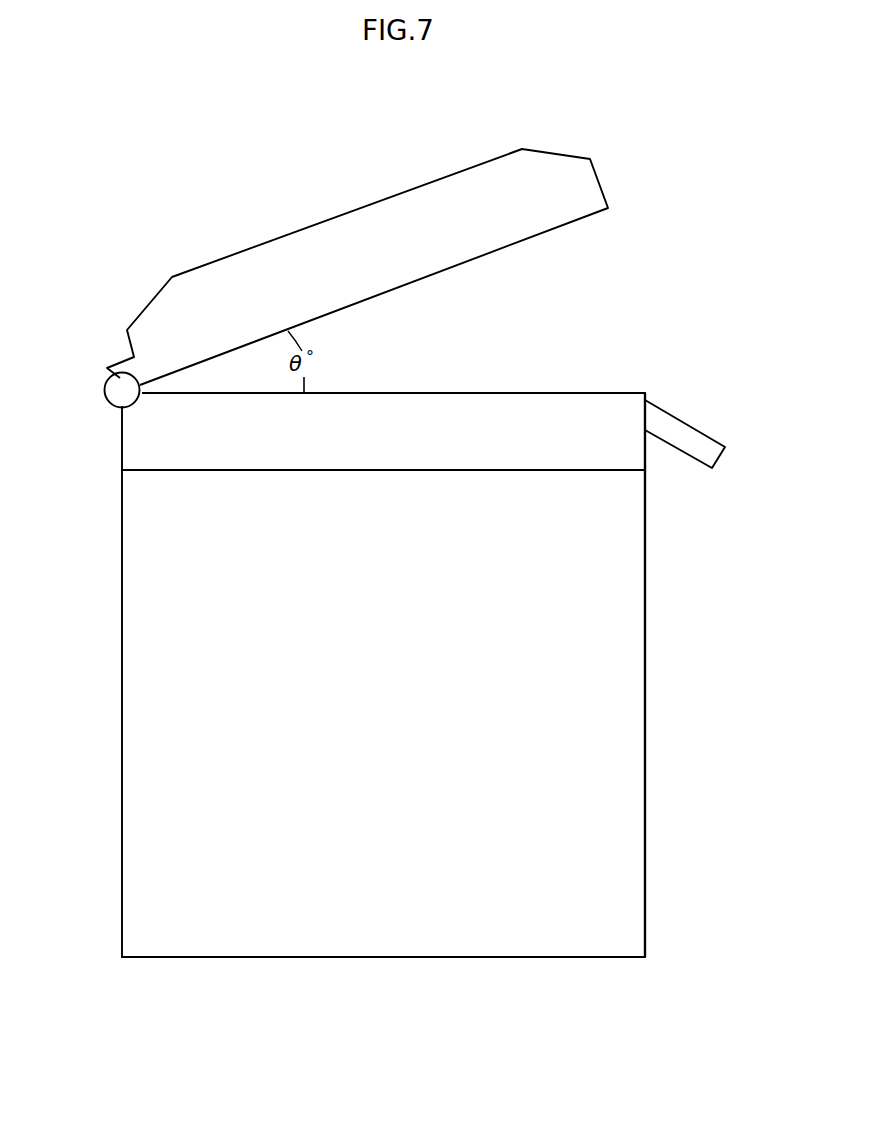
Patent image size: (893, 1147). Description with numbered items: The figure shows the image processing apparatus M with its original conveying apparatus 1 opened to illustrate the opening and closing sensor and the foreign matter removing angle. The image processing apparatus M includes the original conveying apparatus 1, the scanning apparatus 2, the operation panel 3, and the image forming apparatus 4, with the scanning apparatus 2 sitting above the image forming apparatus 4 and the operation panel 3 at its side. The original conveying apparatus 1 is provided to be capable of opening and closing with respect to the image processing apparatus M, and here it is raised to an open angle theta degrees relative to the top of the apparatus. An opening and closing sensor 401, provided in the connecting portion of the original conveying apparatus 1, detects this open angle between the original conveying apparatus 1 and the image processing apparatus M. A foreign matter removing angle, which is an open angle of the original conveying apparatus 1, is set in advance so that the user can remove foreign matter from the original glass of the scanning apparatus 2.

The image processing apparatus M is at (622, 327).
The original conveying apparatus 1 is at (430, 182).
The opening and closing sensor 401 is at (121, 372).
The scanning apparatus 2 is at (102, 395).
The image forming apparatus 4 is at (103, 957).
The operation panel 3 is at (718, 458).